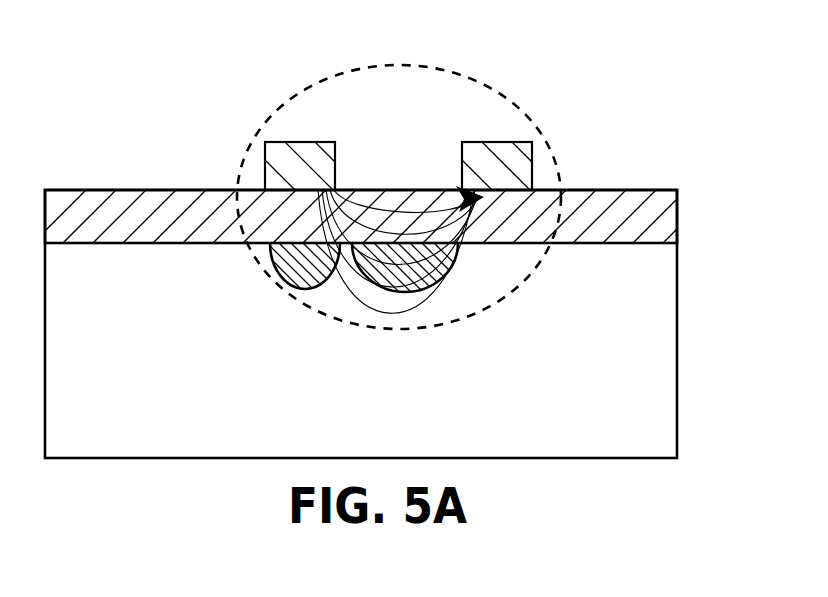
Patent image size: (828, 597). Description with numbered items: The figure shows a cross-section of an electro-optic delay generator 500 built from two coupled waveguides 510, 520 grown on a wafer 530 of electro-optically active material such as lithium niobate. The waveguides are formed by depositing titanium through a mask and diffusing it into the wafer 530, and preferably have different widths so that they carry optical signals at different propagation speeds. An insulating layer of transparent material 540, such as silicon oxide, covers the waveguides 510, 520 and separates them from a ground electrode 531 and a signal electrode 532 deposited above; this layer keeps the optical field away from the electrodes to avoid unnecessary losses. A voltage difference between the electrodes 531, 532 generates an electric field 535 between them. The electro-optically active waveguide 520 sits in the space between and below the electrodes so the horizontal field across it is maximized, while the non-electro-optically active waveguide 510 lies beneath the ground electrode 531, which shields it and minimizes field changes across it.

The electro-optic delay generator 500 is at (366, 28).
The non-electro-optically active waveguide 510 is at (291, 279).
The electro-optically active waveguide 520 is at (437, 282).
The wafer 530 is at (655, 333).
The ground electrode 531 is at (298, 148).
The signal electrode 532 is at (517, 147).
The electric field 535 is at (412, 198).
The insulating layer of transparent material 540 is at (620, 197).